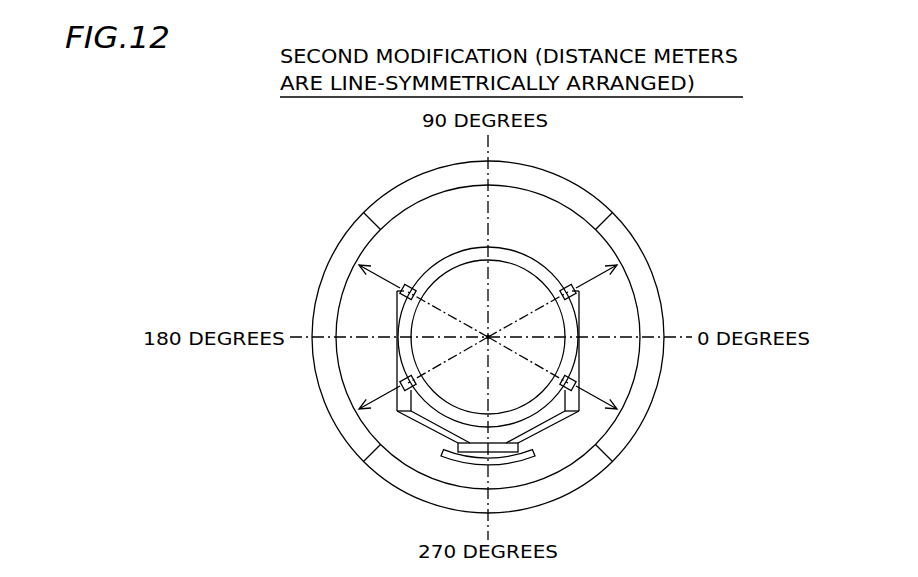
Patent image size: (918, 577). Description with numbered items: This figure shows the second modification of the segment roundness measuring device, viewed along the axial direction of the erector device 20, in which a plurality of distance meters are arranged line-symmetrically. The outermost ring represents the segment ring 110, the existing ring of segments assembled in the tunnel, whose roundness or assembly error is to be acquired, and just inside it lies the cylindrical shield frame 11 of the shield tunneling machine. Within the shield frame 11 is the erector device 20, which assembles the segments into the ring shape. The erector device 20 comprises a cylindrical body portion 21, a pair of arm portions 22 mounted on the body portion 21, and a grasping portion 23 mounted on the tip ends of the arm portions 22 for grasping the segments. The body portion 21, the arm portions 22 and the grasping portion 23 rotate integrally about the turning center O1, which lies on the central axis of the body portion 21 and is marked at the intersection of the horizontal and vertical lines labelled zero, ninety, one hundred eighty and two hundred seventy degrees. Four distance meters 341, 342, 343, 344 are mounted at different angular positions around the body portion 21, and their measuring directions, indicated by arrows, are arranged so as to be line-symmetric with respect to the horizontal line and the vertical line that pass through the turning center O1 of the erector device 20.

The shield frame 11 is at (643, 306).
The segment ring 110 is at (582, 183).
The erector device 20 is at (520, 230).
The body portion 21 is at (438, 258).
The arm portions 22 is at (398, 374).
The grasping portion 23 is at (442, 452).
The distance meter 341 is at (571, 283).
The distance meter 342 is at (405, 283).
The distance meter 343 is at (368, 432).
The distance meter 344 is at (608, 432).
The turning center O1 is at (488, 337).